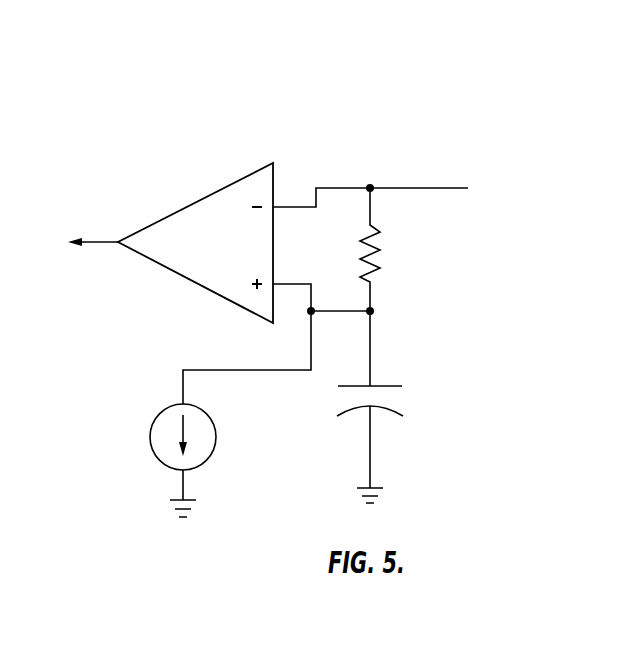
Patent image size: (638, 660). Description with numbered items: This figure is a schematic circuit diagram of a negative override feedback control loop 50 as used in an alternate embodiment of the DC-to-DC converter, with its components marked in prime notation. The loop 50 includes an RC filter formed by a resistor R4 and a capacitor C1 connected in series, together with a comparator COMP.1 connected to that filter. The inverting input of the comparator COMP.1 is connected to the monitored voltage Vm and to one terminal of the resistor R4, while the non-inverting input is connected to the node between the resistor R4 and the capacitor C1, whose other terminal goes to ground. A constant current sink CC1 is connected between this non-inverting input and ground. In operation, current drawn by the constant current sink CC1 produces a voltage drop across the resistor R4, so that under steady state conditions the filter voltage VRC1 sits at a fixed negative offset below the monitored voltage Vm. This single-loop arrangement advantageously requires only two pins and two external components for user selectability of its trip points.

The negative override feedback control loop 50 is at (303, 86).
The comparator COMP.1 is at (195, 243).
The resistor R4 is at (387, 249).
The capacitor C1 is at (386, 407).
The constant current sink CC1 is at (164, 460).